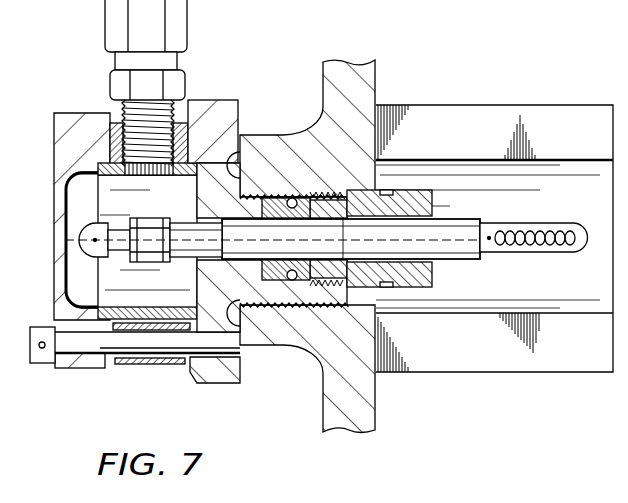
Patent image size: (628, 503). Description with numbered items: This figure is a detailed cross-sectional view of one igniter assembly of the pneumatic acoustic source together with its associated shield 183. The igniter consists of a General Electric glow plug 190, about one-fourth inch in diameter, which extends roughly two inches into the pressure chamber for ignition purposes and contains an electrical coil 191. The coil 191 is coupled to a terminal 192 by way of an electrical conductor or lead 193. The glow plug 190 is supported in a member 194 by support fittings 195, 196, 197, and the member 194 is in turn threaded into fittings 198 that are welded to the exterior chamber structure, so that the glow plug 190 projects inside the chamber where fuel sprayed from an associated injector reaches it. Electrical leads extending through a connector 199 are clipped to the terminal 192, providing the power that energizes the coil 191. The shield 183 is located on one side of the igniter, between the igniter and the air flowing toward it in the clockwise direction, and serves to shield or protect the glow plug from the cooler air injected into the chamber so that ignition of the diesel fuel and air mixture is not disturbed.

The shield 183 is at (489, 105).
The glow plug 190 is at (512, 252).
The electrical coil 191 is at (516, 229).
The terminal 192 is at (94, 262).
The electrical conductor or lead 193 is at (264, 214).
The member 194 is at (213, 103).
The support fitting 195 is at (263, 273).
The support fitting 196 is at (303, 290).
The support fitting 197 is at (424, 287).
The fittings 198 is at (258, 137).
The connector 199 is at (189, 23).